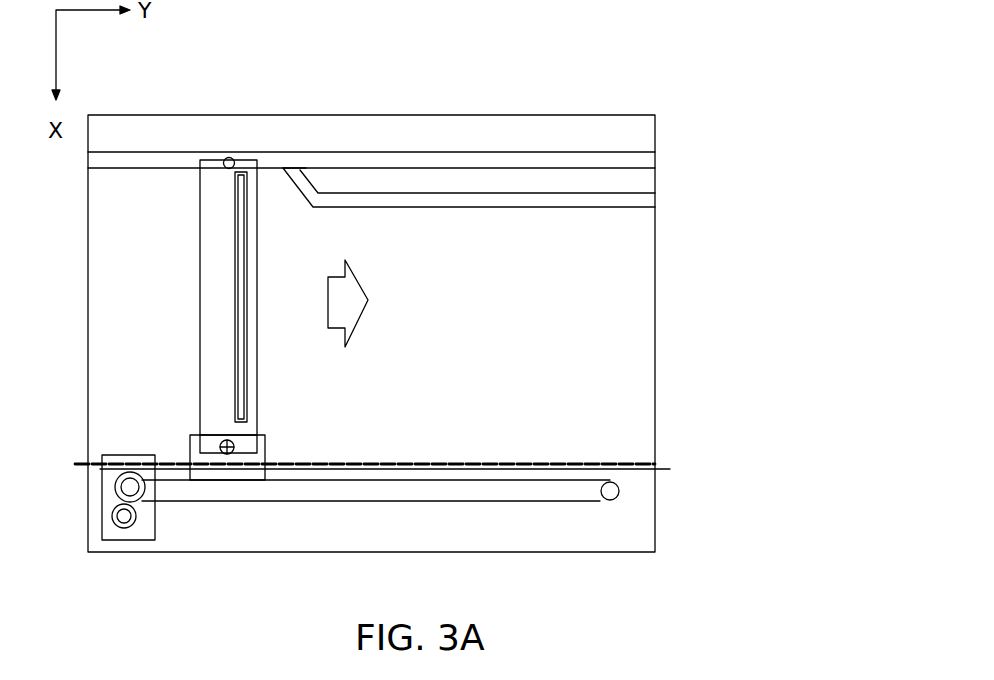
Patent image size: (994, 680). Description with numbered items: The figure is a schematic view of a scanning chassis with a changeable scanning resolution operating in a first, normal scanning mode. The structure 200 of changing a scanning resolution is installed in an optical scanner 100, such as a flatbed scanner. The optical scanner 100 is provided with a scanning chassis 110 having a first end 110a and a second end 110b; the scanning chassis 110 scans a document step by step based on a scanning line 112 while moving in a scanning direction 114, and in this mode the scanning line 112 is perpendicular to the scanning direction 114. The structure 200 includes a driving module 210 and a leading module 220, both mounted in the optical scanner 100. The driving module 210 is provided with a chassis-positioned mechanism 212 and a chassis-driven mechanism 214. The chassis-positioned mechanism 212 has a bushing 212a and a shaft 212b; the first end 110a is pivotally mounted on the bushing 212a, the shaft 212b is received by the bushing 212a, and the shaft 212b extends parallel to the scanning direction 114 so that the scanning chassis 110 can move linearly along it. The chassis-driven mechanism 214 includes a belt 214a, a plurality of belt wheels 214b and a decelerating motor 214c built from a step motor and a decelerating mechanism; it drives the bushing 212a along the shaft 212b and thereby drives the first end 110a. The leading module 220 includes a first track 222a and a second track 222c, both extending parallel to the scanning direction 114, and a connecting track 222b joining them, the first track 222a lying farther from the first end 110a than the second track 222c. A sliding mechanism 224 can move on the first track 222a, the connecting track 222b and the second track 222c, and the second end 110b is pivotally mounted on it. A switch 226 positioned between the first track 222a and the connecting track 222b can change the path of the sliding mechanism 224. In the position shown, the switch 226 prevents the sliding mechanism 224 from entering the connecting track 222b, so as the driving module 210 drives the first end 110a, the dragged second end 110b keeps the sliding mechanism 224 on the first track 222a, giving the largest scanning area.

The optical scanner 100 is at (100, 260).
The scanning chassis 110 is at (192, 250).
The first end 110a is at (213, 442).
The second end 110b is at (211, 163).
The scanning line 112 is at (237, 280).
The scanning direction 114 is at (356, 275).
The structure of changing a scanning resolution 200 is at (770, 478).
The driving module 210 is at (425, 508).
The chassis-positioned mechanism 212 is at (665, 452).
The bushing 212a is at (265, 450).
The shaft 212b is at (300, 462).
The chassis-driven mechanism 214 is at (414, 535).
The belt 214a is at (215, 503).
The belt wheels 214b is at (138, 506).
The decelerating motor 214c is at (122, 541).
The leading module 220 is at (431, 128).
The first track 222a is at (543, 160).
The connecting track 222b is at (322, 184).
The second track 222c is at (468, 200).
The sliding mechanism 224 is at (228, 158).
The switch 226 is at (293, 166).